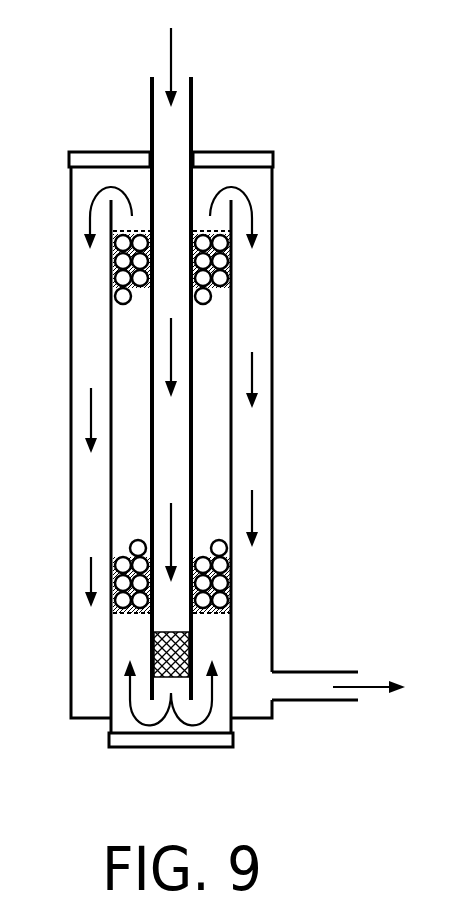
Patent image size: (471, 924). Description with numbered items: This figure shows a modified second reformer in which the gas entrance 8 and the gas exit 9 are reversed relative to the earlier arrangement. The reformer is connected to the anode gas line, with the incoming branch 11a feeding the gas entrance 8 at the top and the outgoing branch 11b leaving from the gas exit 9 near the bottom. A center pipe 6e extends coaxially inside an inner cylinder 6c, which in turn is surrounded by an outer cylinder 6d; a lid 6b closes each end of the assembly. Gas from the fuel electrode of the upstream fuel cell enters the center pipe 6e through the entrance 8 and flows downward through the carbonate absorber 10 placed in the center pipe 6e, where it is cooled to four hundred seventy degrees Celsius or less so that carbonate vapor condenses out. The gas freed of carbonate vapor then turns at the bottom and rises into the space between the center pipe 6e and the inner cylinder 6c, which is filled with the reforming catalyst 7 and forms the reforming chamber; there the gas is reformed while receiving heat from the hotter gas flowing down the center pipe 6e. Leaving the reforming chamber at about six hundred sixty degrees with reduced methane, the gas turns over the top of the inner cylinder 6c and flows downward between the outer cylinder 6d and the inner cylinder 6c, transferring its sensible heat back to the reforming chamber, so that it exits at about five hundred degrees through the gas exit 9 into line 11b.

The lid 6b is at (237, 157).
The inner cylinder 6c is at (231, 448).
The outer cylinder 6d is at (273, 563).
The center pipe 6e is at (162, 473).
The reforming catalyst 7 is at (112, 268).
The gas entrance 8 is at (150, 123).
The gas exit 9 is at (320, 702).
The carbonate absorber 10 is at (150, 647).
The anode gas line 11a is at (170, 49).
The anode gas line 11b is at (373, 684).